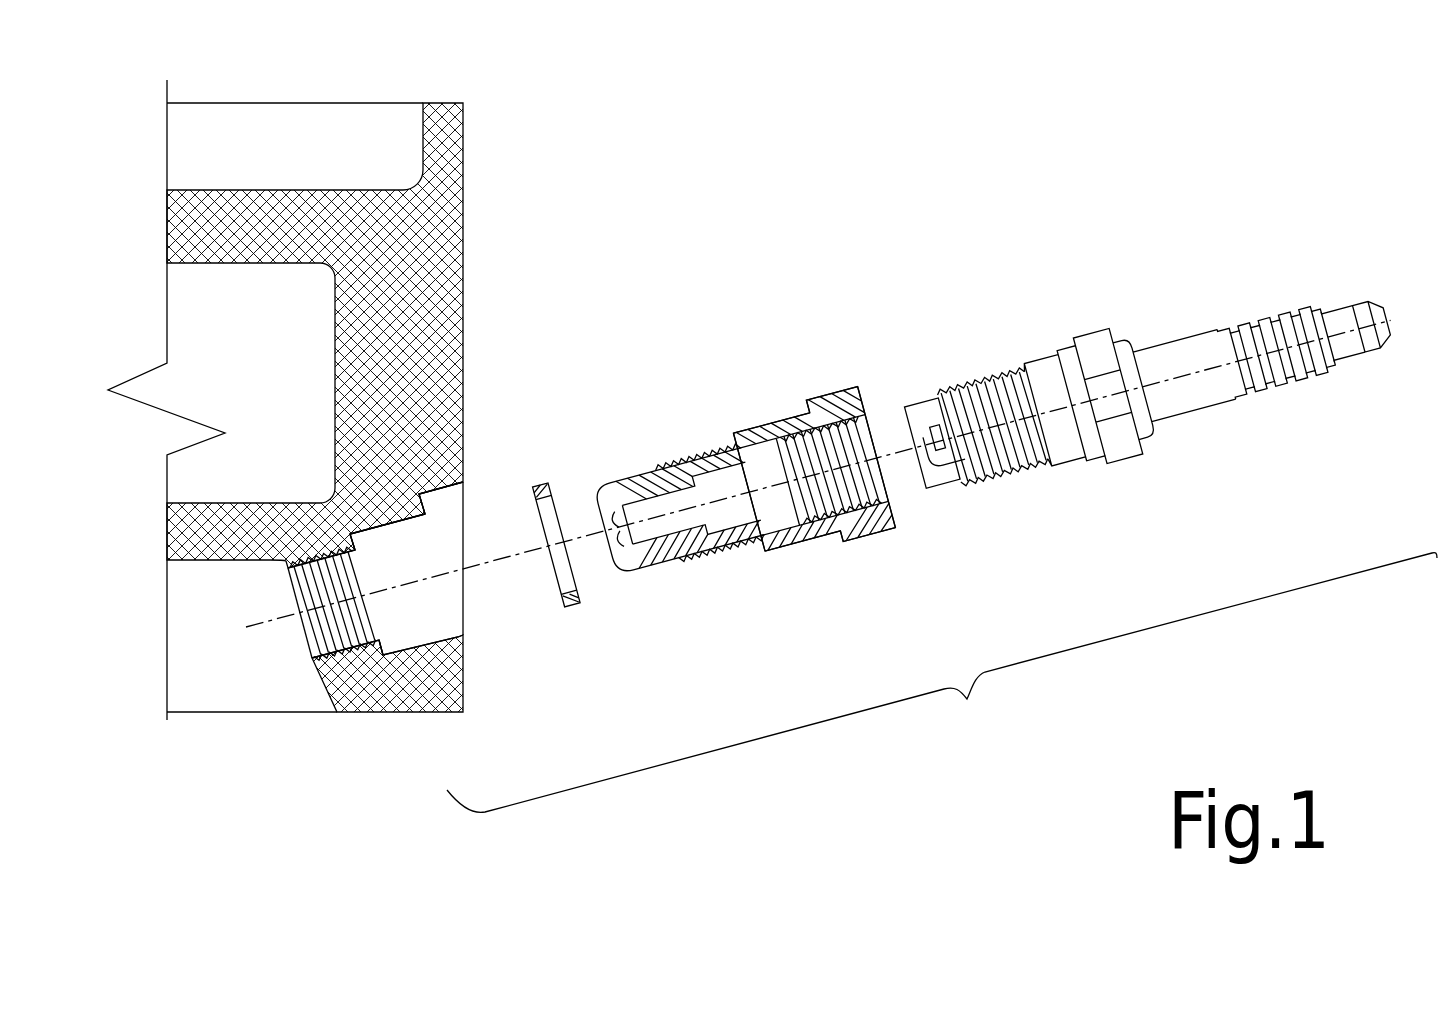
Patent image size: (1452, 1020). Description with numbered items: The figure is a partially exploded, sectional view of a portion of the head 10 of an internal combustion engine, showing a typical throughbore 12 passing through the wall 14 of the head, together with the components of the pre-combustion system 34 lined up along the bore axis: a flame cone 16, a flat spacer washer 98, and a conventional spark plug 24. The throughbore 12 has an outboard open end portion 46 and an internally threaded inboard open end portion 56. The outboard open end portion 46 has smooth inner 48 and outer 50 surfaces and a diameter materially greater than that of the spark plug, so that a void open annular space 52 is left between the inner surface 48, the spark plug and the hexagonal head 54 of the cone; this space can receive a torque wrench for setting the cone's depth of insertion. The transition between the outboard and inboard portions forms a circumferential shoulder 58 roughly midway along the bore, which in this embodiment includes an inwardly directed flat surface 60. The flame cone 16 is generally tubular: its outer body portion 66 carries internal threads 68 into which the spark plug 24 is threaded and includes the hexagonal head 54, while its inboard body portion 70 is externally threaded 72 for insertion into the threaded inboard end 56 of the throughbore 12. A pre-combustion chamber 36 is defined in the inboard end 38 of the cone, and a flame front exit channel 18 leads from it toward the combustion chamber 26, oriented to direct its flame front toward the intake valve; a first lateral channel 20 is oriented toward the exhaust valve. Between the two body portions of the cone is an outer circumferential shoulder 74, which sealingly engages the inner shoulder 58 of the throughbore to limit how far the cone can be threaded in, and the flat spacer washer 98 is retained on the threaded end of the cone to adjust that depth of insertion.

The head 10 is at (341, 400).
The throughbore 12 is at (403, 540).
The wall 14 is at (463, 190).
The flame cone 16 is at (800, 571).
The flame front exit channel 18 is at (669, 565).
The first lateral channel 20 is at (608, 477).
The spark plug 24 is at (1125, 475).
The combustion chamber 26 is at (183, 688).
The pre-combustion system 34 is at (942, 683).
The pre-combustion chamber 36 is at (750, 430).
The inboard end 38 is at (600, 505).
The outboard open end portion 46 is at (467, 513).
The inner surface 48 is at (380, 537).
The outer surface 50 is at (430, 717).
The annular space 52 is at (437, 511).
The hexagonal head 54 is at (840, 425).
The inboard open end portion 56 is at (300, 510).
The circumferential shoulder 58 is at (383, 713).
The flat surface 60 is at (417, 713).
The outer body portion 66 is at (870, 530).
The internal threads 68 is at (870, 430).
The inboard body portion 70 is at (688, 460).
The external threads 72 is at (746, 552).
The circumferential shoulder 74 is at (800, 410).
The flat spacer washer 98 is at (547, 567).